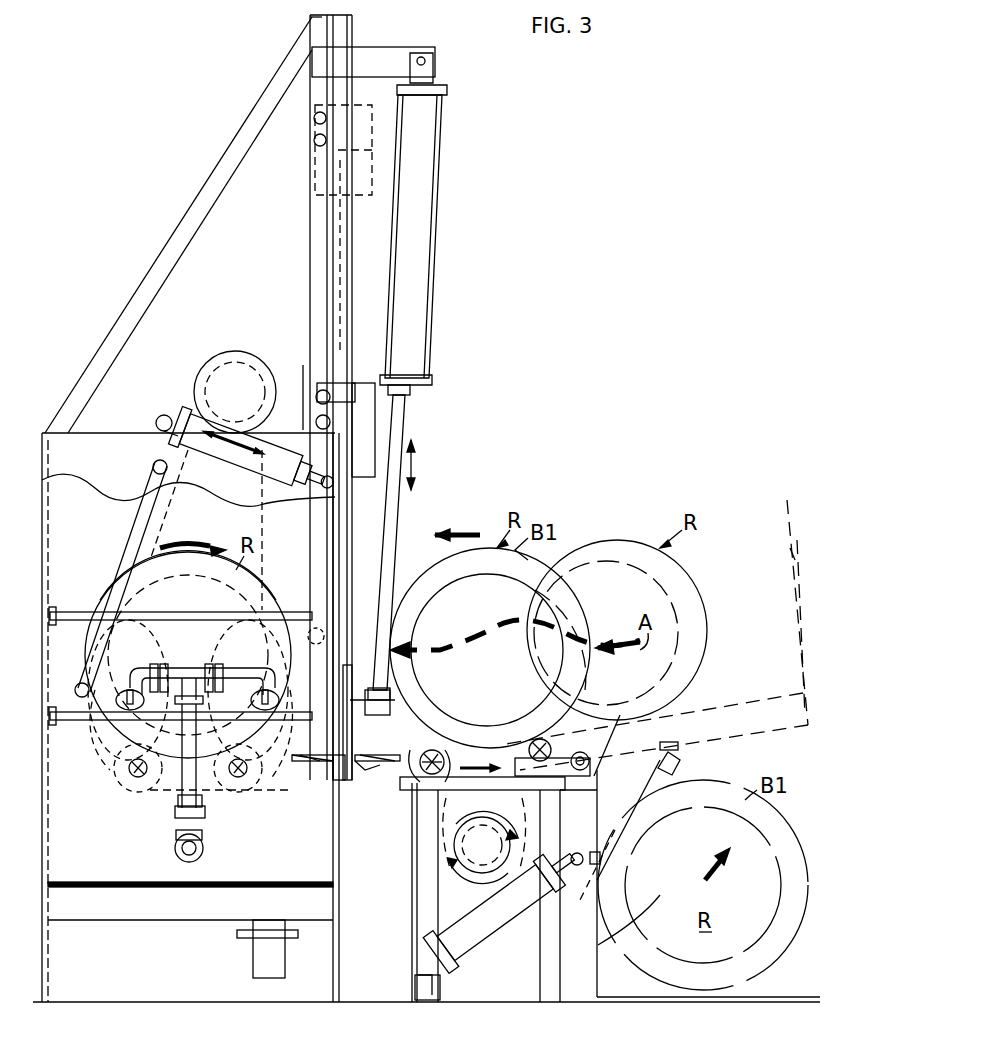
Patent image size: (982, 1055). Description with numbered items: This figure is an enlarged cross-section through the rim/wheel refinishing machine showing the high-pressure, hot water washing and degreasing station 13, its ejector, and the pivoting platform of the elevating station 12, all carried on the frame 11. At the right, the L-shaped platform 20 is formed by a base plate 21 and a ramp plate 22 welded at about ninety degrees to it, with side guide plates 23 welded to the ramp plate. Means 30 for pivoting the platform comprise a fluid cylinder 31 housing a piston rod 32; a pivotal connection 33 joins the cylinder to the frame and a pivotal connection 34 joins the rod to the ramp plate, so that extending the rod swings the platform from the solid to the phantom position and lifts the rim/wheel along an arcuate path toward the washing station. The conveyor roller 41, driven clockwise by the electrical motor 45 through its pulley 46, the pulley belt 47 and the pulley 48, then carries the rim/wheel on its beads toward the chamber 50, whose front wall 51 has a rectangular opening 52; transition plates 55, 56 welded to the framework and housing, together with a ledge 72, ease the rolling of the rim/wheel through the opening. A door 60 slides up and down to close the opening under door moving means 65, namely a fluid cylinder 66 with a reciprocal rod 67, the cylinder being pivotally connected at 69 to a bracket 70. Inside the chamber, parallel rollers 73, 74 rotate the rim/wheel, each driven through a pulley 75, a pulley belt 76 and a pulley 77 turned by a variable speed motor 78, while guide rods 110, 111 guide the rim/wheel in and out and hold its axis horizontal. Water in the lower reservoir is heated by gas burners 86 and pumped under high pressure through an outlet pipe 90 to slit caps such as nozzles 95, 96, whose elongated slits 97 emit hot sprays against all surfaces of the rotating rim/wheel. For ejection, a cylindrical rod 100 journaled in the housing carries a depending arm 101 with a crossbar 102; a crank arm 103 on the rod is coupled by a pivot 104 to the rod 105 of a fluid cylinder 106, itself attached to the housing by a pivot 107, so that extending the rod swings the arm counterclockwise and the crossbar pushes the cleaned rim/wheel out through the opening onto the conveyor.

The frame 11 is at (265, 78).
The elevating station 12 is at (688, 500).
The high-pressure, hot water washing and degreasing station 13 is at (462, 430).
The L-shaped platform 20 is at (738, 655).
The base plate 21 is at (790, 550).
The ramp plate 22 is at (760, 738).
The side guide plate 23 is at (752, 708).
The means for pivoting platform 30 is at (504, 913).
The fluid cylinder 31 is at (473, 950).
The piston rod 32 is at (628, 792).
The pivotal connection 33 is at (433, 958).
The pivotal connection 34 is at (680, 762).
The roller 41 is at (437, 750).
The electrical motor 45 is at (468, 825).
The pulley 46 is at (493, 857).
The pulley belt 47 is at (484, 845).
The pulley 48 is at (425, 740).
The chamber 50 is at (108, 450).
The front wall 51 is at (332, 812).
The opening 52 is at (320, 745).
The transition plate 55 is at (382, 765).
The transition plate 56 is at (385, 715).
The door 60 is at (340, 530).
The door moving means 65 is at (440, 240).
The fluid cylinder 66 is at (430, 180).
The reciprocal rod 67 is at (397, 510).
The pivotal connection 69 is at (428, 63).
The bracket 70 is at (365, 60).
The ledge 72 is at (292, 765).
The roller 73 is at (135, 782).
The roller 74 is at (244, 782).
The pulley 75 is at (158, 800).
The pulley belt 76 is at (178, 498).
The pulley 77 is at (246, 404).
The variable speed motor 78 is at (235, 352).
The gas burner 86 is at (260, 945).
The outlet pipe 90 is at (240, 660).
The slit cap nozzle 95 is at (140, 665).
The slit cap nozzle 96 is at (202, 752).
The elongated slit 97 is at (105, 728).
The cylindrical rod 100 is at (175, 470).
The depending arm 101 is at (120, 556).
The crossbar 102 is at (78, 684).
The crank arm 103 is at (153, 467).
The pivot 104 is at (163, 415).
The rod 105 is at (182, 428).
The fluid cylinder 106 is at (252, 468).
The pivot 107 is at (310, 485).
The guide rod 110 is at (75, 715).
The guide rod 111 is at (183, 620).